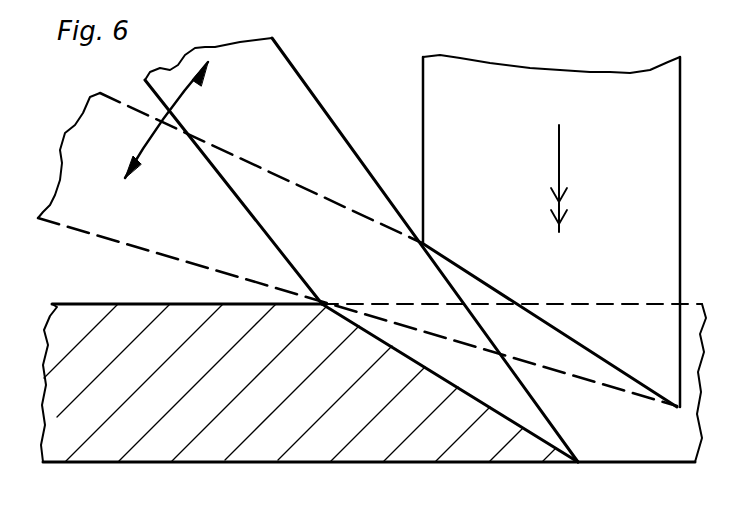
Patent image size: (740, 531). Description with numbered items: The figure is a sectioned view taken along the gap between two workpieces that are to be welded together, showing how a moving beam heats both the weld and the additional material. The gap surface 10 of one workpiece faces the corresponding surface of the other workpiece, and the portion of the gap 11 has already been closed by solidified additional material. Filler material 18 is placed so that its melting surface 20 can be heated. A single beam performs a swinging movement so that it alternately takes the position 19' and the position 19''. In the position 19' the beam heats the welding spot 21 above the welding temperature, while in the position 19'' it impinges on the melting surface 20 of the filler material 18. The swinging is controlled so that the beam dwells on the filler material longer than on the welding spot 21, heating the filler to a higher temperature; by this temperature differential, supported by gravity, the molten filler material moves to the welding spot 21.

The gap surface 10 is at (608, 440).
The closed portion of the gap 11 is at (143, 443).
The filler material 18 is at (508, 80).
The beam position 19' is at (361, 250).
The beam position 19'' is at (357, 249).
The melting surface 20 is at (552, 332).
The welding spot 21 is at (465, 395).